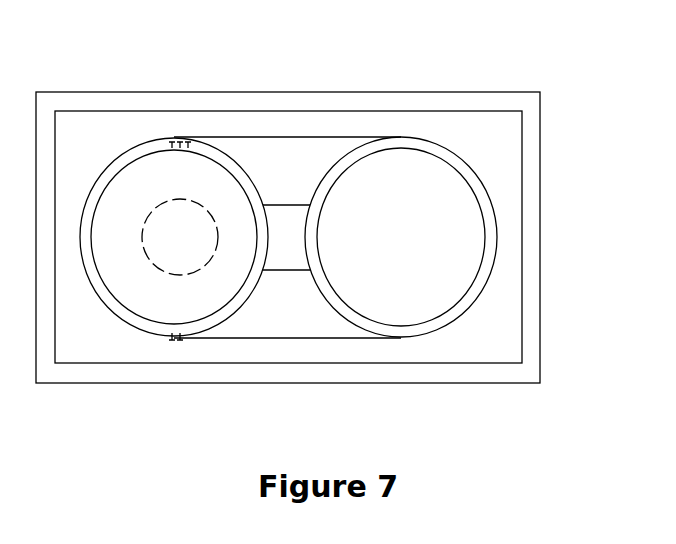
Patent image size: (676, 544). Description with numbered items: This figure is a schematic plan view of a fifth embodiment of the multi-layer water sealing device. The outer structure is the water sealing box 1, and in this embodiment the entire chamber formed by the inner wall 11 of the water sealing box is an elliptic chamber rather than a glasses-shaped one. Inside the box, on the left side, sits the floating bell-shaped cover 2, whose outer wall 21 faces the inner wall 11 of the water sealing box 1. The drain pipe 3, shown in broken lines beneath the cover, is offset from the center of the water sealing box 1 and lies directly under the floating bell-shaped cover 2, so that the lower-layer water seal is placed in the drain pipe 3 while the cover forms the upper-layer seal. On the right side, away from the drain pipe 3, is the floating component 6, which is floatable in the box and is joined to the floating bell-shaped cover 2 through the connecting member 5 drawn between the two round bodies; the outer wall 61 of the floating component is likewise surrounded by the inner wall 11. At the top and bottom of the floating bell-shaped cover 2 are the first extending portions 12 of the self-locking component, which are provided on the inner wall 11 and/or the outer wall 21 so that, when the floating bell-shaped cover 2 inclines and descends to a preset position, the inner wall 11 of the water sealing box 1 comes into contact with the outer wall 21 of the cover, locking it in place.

The water sealing box 1 is at (62, 133).
The inner wall of water sealing box 11 is at (116, 160).
The floating bell-shaped cover 2 is at (157, 182).
The outer wall of floating bell-shaped cover 21 is at (221, 158).
The connecting member 5 is at (285, 236).
The floating component 6 is at (343, 187).
The outer wall of floating component 61 is at (397, 148).
The drain pipe 3 is at (170, 275).
The first extending portion 12 is at (180, 340).